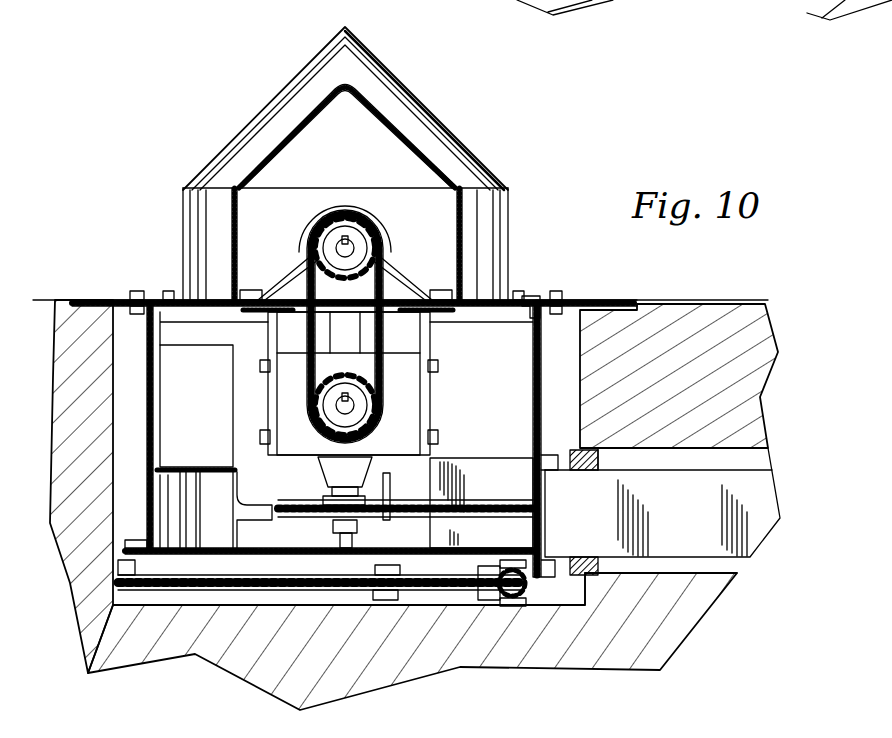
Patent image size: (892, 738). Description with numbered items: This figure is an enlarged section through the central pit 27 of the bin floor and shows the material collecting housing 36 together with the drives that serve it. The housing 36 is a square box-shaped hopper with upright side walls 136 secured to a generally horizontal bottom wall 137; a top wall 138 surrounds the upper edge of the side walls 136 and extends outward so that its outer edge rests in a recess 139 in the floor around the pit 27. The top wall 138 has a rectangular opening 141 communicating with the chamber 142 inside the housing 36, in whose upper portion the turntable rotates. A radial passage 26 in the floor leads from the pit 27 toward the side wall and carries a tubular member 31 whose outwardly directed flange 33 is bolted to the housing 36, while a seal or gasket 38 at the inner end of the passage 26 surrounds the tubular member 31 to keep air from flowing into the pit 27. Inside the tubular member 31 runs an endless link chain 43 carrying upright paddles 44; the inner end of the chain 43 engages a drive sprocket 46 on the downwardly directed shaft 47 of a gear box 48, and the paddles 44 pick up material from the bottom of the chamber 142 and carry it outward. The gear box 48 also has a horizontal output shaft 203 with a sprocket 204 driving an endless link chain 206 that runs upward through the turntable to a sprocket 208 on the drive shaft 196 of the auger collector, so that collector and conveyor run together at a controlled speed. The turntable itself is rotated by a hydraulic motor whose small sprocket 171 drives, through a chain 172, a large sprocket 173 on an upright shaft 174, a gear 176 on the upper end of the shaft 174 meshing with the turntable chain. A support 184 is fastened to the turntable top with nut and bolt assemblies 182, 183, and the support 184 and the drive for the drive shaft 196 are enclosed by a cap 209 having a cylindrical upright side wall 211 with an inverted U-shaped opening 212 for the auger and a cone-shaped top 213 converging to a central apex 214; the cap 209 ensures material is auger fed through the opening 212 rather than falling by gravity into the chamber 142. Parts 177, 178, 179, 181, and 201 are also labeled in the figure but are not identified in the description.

The radial passage 26 is at (735, 466).
The central pit 27 is at (136, 368).
The tubular member 31 is at (752, 500).
The outwardly directed flange 33 is at (575, 450).
The housing 36 is at (570, 298).
The seal or gasket 38 is at (583, 558).
The endless link chain 43 is at (500, 498).
The upright paddles 44 is at (262, 484).
The drive sprocket 46 is at (333, 527).
The downwardly directed shaft 47 is at (346, 548).
The gear box 48 is at (405, 398).
The upright side walls 136 is at (143, 430).
The bottom wall 137 is at (440, 550).
The top wall 138 is at (112, 298).
The recess 139 is at (90, 298).
The rectangular opening 141 is at (530, 296).
The chamber 142 is at (178, 379).
The small sprocket 171 is at (500, 606).
The chain 172 is at (282, 580).
The large sprocket 173 is at (160, 607).
The upright shaft 174 is at (192, 510).
The gear 176 is at (150, 300).
The mounting bracket 177 is at (260, 444).
The right enclosure wall 178 is at (424, 411).
The upper bolt 179 is at (260, 368).
The lower bolt 181 is at (440, 440).
The nut and bolt assembly 182 is at (248, 290).
The nut and bolt assembly 183 is at (447, 290).
The support 184 is at (396, 270).
The drive shaft 196 is at (356, 246).
The coupling 201 is at (358, 318).
The horizontal output shaft 203 is at (316, 430).
The sprocket 204 is at (372, 430).
The endless link chain 206 is at (420, 372).
The sprocket 208 is at (320, 232).
The cap 209 is at (432, 107).
The cylindrical upright side wall 211 is at (480, 210).
The opening 212 is at (345, 204).
The cone-shaped top 213 is at (290, 108).
The central point or apex 214 is at (345, 27).